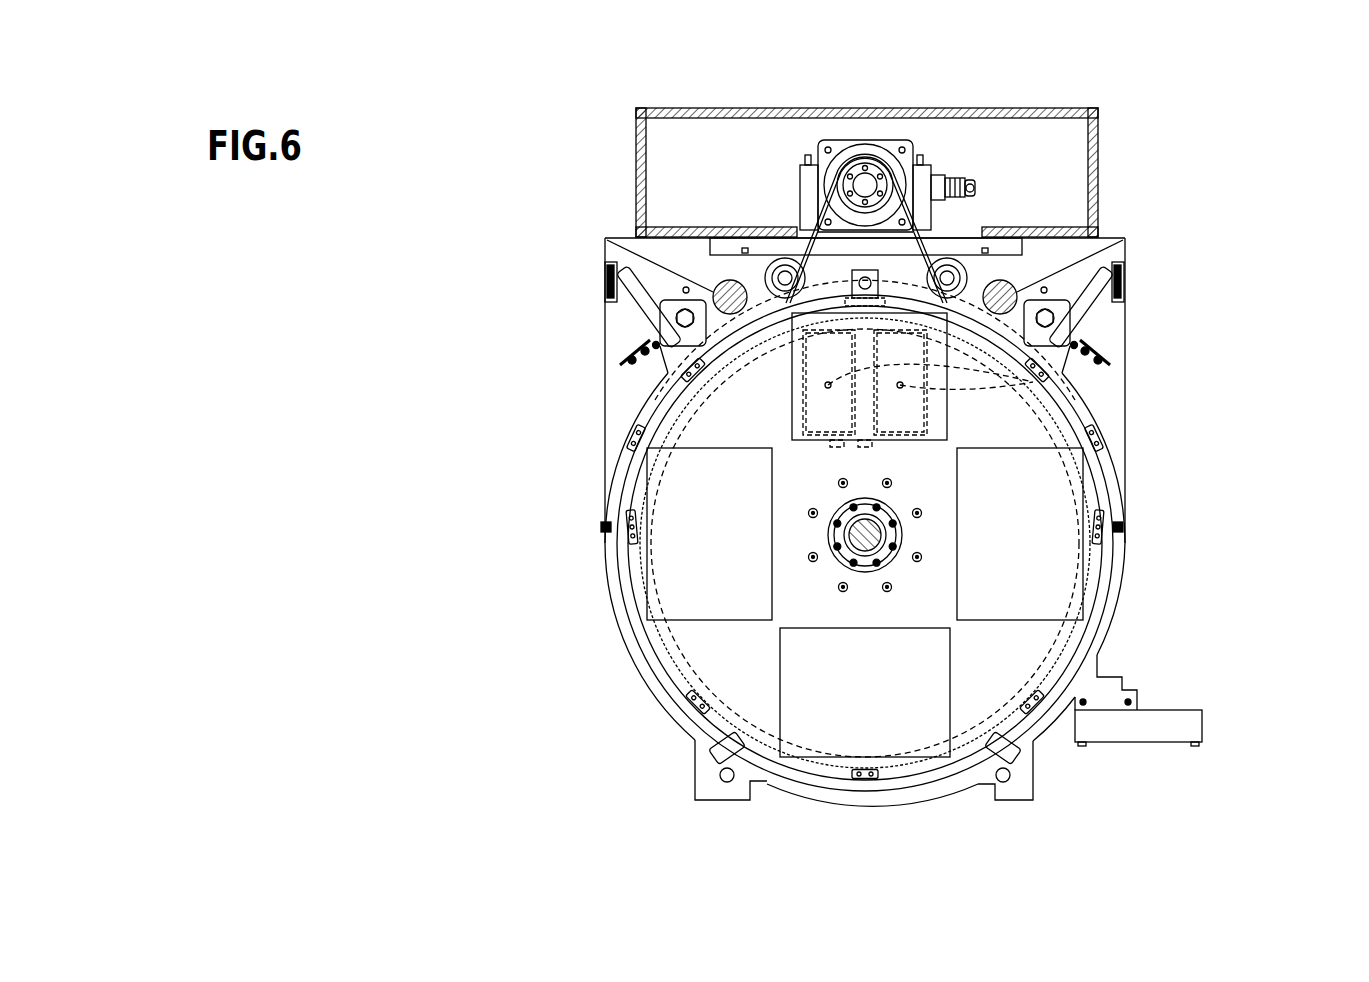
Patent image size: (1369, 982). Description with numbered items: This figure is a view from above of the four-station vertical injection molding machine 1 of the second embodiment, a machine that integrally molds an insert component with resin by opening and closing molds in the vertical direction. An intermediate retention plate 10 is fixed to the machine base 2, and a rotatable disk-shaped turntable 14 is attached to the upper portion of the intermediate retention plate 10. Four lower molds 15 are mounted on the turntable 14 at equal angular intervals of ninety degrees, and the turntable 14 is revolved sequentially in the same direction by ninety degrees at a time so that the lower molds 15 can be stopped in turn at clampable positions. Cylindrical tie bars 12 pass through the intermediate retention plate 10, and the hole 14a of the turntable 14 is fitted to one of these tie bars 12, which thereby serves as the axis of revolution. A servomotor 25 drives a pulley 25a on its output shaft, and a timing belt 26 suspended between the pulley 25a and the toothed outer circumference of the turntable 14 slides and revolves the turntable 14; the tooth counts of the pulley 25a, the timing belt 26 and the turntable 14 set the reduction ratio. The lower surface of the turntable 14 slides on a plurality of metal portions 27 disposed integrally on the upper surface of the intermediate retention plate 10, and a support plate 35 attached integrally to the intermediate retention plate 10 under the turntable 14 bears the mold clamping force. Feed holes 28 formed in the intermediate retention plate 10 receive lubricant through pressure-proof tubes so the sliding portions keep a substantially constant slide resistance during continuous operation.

The vertical injection molding machine 1 is at (1163, 375).
The machine base 2 is at (606, 320).
The intermediate retention plate 10 is at (1070, 380).
The tie bars 12 is at (715, 289).
The turntable 14 is at (722, 648).
The hole 14a is at (905, 547).
The lower molds 15 is at (690, 545).
The servomotor 25 is at (882, 152).
The pulley 25a is at (864, 160).
The timing belt 26 is at (813, 247).
The metal portions 27 is at (975, 265).
The feed holes 28 is at (603, 529).
The support plate 35 is at (642, 690).